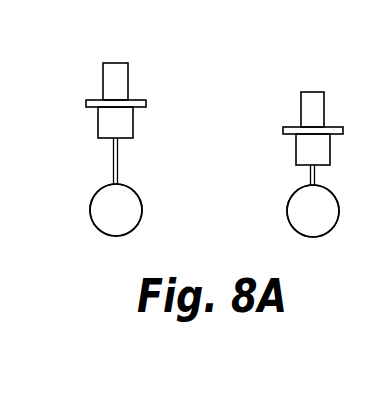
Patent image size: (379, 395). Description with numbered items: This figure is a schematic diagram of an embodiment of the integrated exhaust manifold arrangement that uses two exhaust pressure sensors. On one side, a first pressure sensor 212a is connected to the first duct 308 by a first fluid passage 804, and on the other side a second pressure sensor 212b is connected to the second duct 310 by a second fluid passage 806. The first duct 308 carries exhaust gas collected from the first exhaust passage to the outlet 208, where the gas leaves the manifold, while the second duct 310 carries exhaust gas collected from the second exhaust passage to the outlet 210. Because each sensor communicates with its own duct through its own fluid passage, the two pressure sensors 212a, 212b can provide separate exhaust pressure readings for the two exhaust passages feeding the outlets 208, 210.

The pressure sensor 212a is at (110, 63).
The pressure sensor 212b is at (313, 92).
The first fluid passage 804 is at (113, 163).
The second fluid passage 806 is at (310, 173).
The outlet 208 is at (92, 200).
The outlet 210 is at (289, 206).
The first duct 308 is at (122, 212).
The second duct 310 is at (307, 213).